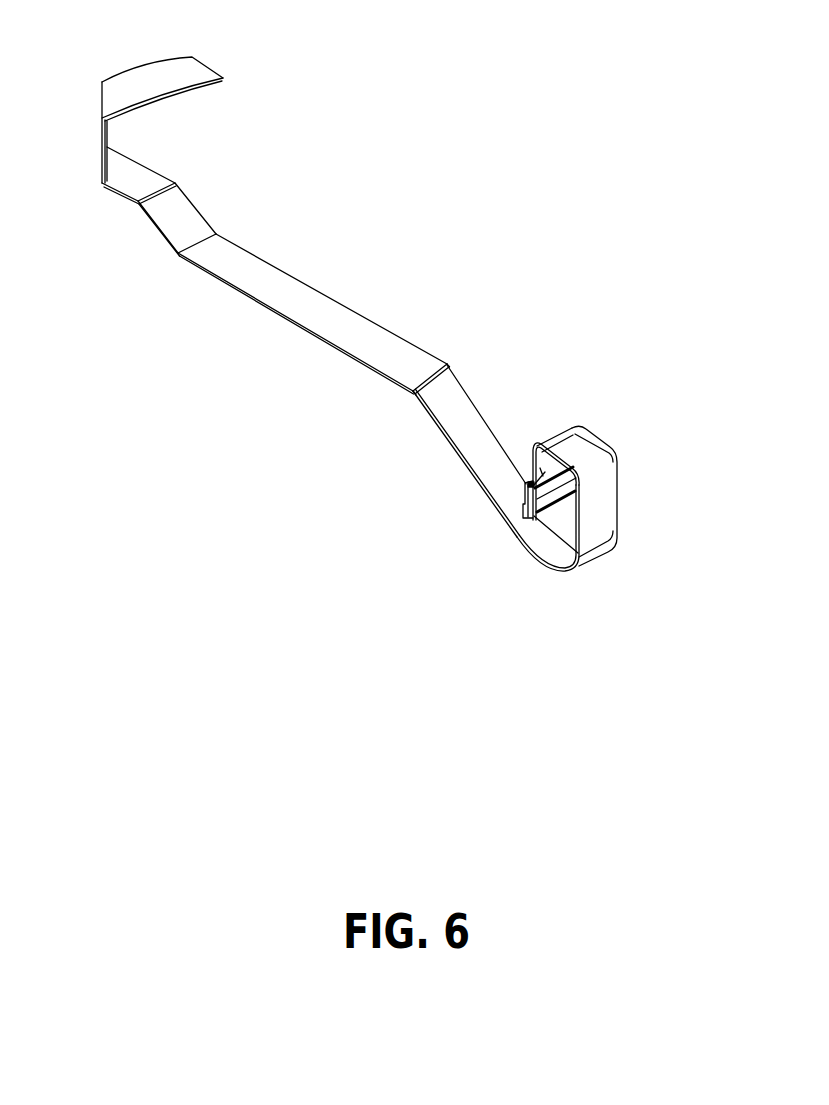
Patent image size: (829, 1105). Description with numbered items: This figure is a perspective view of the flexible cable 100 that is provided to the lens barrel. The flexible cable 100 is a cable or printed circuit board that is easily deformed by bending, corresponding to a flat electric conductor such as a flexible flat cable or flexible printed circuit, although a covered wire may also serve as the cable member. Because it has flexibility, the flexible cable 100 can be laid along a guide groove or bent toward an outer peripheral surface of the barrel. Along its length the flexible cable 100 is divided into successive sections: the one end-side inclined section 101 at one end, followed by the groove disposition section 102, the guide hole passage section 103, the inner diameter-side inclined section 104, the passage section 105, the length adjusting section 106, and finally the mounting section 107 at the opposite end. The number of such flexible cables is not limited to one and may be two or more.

The flexible cable 100 is at (386, 200).
The one end-side inclined section 101 is at (185, 217).
The groove disposition section 102 is at (378, 347).
The guide hole passage section 103 is at (437, 366).
The inner diameter-side inclined section 104 is at (475, 457).
The passage section 105 is at (534, 540).
The length adjusting section 106 is at (600, 513).
The mounting section 107 is at (523, 510).